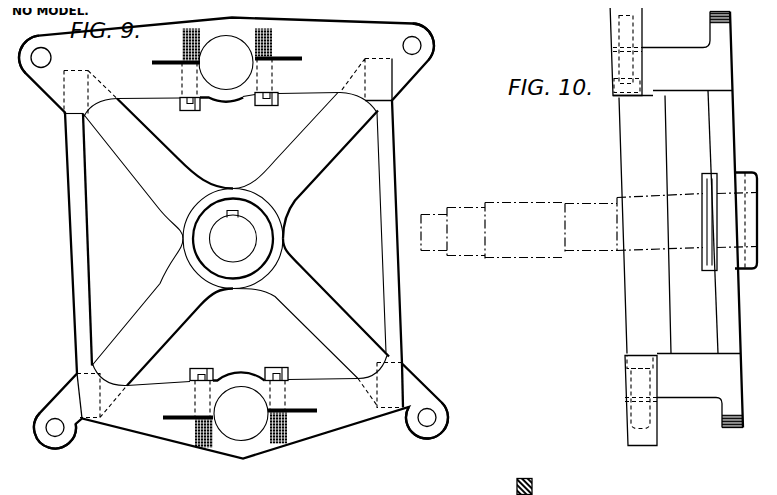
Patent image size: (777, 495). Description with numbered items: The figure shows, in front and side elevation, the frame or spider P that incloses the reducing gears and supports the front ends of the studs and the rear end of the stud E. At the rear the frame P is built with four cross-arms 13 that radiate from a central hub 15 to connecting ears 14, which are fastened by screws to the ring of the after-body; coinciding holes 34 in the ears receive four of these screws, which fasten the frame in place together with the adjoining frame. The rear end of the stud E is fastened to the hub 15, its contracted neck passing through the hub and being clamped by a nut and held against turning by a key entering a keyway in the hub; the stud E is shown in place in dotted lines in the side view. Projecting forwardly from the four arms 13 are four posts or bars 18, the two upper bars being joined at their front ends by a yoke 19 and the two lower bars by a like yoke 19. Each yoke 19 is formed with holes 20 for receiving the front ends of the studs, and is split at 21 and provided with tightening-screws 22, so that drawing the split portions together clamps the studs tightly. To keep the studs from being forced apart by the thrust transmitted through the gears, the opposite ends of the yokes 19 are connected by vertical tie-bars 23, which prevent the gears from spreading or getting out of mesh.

In FIG. 9, the cross-arms 13 is at (236, 239).
In FIG. 10, the cross-arms 13 is at (717, 140).
In FIG. 9, the ears 14 is at (421, 46).
In FIG. 10, the ears 14 is at (738, 421).
In FIG. 9, the central hub 15 is at (274, 228).
In FIG. 9, the posts or bars 18 is at (72, 104).
In FIG. 10, the posts or bars 18 is at (677, 220).
In FIG. 9, the yoke 19 is at (290, 236).
In FIG. 10, the yoke 19 is at (611, 33).
In FIG. 9, the holes 20 is at (237, 238).
In FIG. 9, the split 21 is at (175, 63).
In FIG. 9, the tightening-screws 22 is at (264, 107).
In FIG. 9, the vertical tie-bars 23 is at (71, 227).
In FIG. 10, the vertical tie-bars 23 is at (645, 225).
In FIG. 9, the holes 34 is at (58, 436).
In FIG. 9, the frame P is at (233, 238).
In FIG. 10, the frame P is at (592, 136).
In FIG. 10, the stud E is at (589, 222).